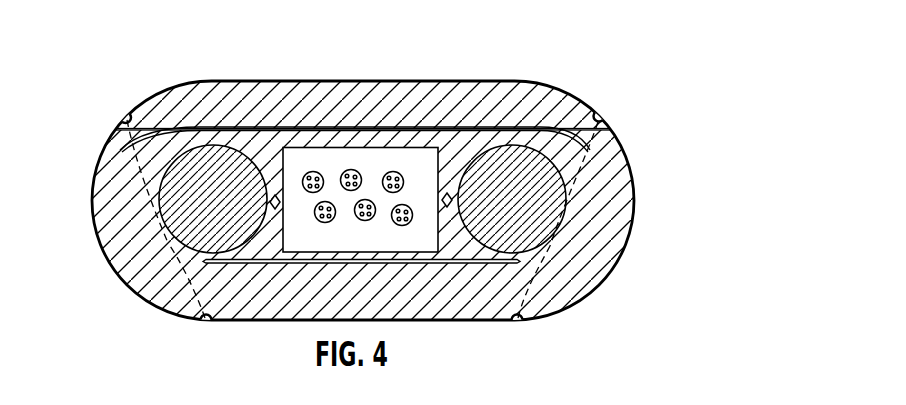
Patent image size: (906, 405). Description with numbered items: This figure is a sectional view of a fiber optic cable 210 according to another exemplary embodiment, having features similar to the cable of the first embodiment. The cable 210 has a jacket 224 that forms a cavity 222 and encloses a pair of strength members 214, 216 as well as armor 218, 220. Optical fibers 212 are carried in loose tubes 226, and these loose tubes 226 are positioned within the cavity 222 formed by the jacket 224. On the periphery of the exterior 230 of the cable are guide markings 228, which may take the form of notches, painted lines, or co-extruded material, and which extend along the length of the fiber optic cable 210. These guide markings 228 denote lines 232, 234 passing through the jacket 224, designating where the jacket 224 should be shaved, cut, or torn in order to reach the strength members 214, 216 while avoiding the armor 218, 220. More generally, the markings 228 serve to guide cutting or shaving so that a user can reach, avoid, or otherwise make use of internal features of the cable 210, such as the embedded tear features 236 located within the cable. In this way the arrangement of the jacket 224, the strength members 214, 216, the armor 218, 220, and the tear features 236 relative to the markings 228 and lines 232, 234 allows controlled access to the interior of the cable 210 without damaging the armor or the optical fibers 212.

The fiber optic cable 210 is at (707, 123).
The optical fibers 212 is at (522, 82).
The strength member 214 is at (535, 199).
The strength member 216 is at (193, 204).
The armor 218 is at (395, 172).
The armor 220 is at (432, 266).
The cavity 222 is at (307, 233).
The jacket 224 is at (470, 303).
The loose tubes 226 is at (404, 177).
The guide markings 228 is at (122, 115).
The exterior 230 is at (268, 72).
The line 232 is at (548, 246).
The line 234 is at (168, 243).
The embedded tear features 236 is at (274, 196).